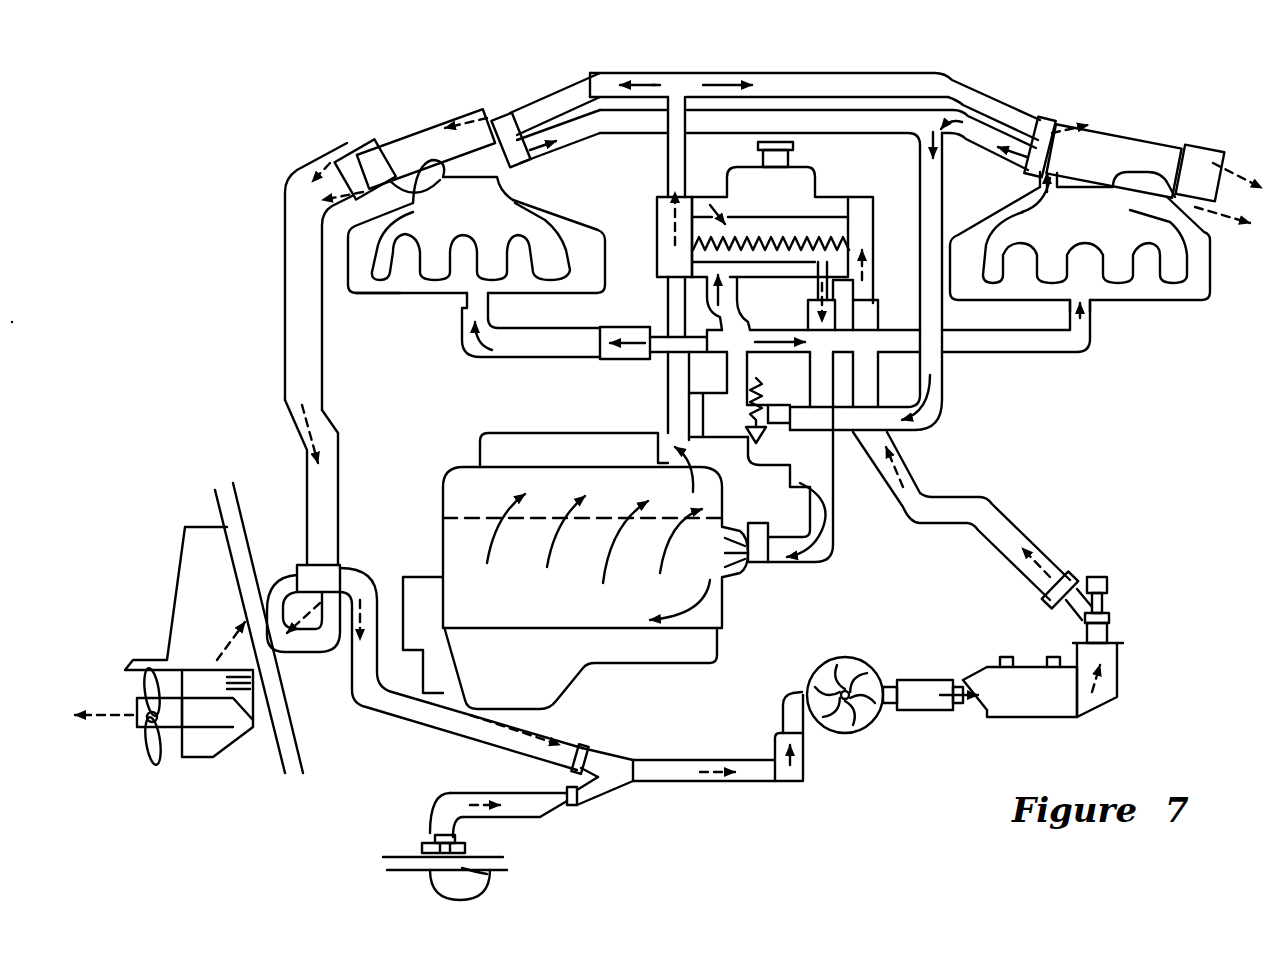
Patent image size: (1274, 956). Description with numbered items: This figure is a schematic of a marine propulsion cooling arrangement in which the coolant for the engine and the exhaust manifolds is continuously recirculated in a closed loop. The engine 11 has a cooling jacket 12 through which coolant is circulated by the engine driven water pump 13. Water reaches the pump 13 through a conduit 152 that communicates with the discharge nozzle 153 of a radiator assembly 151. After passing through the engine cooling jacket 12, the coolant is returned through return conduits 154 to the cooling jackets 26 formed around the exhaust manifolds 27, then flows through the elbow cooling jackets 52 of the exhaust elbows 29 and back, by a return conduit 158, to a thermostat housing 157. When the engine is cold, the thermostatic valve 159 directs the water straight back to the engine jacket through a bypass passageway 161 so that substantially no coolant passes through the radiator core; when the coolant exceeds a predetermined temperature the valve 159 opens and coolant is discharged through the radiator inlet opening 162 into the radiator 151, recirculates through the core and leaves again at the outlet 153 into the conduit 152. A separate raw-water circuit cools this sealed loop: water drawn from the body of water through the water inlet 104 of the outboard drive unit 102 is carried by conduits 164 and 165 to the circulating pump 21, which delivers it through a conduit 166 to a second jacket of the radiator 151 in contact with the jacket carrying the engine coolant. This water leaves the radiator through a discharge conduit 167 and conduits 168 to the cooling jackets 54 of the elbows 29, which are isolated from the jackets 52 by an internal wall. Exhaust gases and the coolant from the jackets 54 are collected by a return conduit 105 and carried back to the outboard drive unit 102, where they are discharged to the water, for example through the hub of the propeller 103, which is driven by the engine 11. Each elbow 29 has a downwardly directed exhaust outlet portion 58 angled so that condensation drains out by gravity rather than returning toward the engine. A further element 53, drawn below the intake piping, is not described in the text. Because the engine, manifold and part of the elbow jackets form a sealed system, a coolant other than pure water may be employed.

The engine 11 is at (437, 487).
The cooling jacket 12 is at (720, 613).
The water pump 13 is at (740, 600).
The circulating pump 21 is at (868, 662).
The exhaust manifold cooling jacket 26 is at (590, 250).
The exhaust manifold 27 is at (407, 307).
The exhaust elbow 29 is at (390, 125).
The elbow cooling jacket 52 is at (505, 118).
The water intake 53 is at (470, 874).
The elbow cooling jacket 54 is at (420, 120).
The exhaust outlet portion 58 is at (362, 140).
The outboard drive unit 102 is at (185, 597).
The propeller 103 is at (133, 727).
The water inlet 104 is at (242, 644).
The return conduit 105 is at (292, 345).
The radiator assembly 151 is at (695, 190).
The conduit 152 is at (834, 548).
The discharge nozzle 153 is at (813, 290).
The return conduits 154 is at (543, 360).
The thermostat housing 157 is at (663, 395).
The return conduit 158 is at (944, 370).
The thermostatic valve 159 is at (762, 383).
The bypass passageway 161 is at (755, 475).
The radiator inlet opening 162 is at (708, 303).
The conduit 164 is at (400, 710).
The conduit 165 is at (715, 787).
The conduit 166 is at (1000, 503).
The discharge conduit 167 is at (663, 155).
The conduits 168 is at (587, 73).